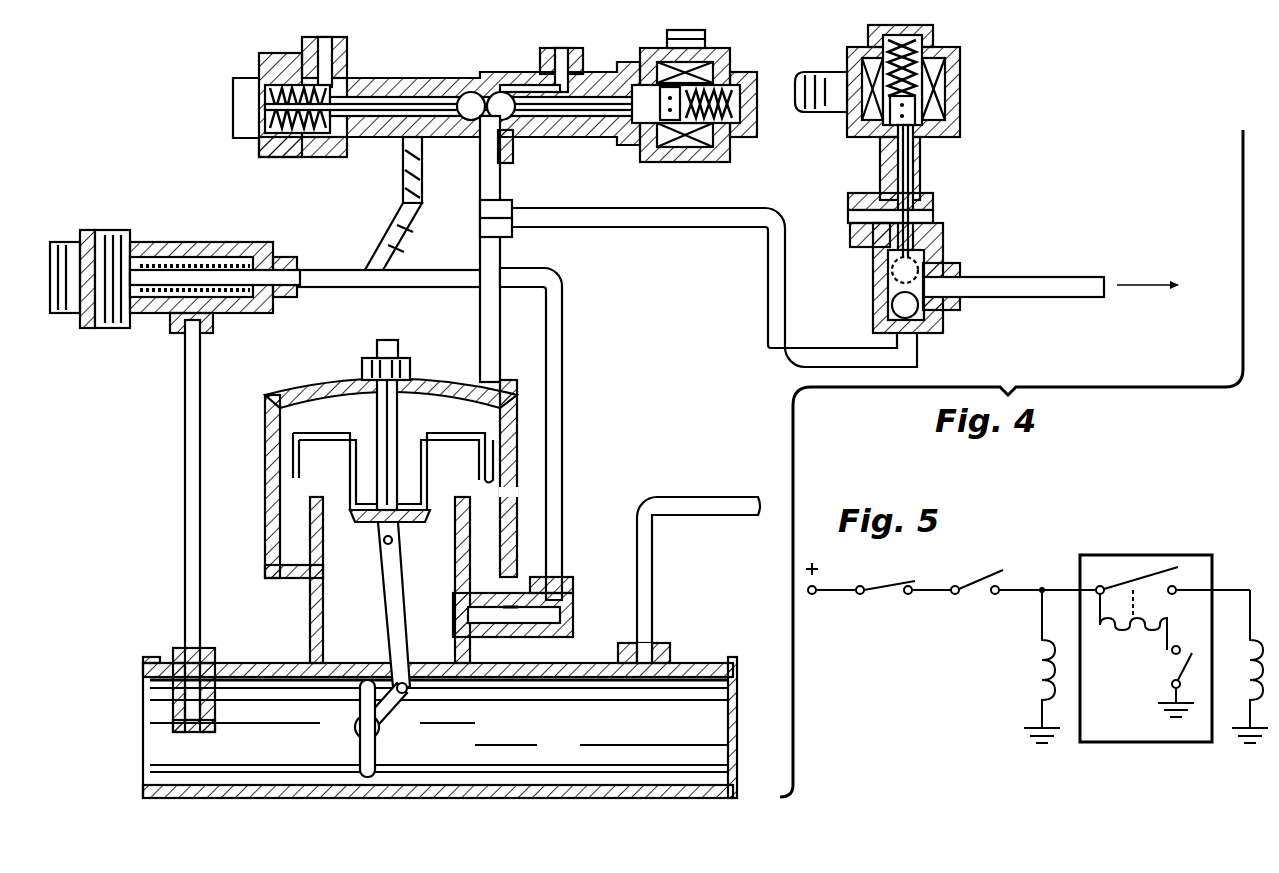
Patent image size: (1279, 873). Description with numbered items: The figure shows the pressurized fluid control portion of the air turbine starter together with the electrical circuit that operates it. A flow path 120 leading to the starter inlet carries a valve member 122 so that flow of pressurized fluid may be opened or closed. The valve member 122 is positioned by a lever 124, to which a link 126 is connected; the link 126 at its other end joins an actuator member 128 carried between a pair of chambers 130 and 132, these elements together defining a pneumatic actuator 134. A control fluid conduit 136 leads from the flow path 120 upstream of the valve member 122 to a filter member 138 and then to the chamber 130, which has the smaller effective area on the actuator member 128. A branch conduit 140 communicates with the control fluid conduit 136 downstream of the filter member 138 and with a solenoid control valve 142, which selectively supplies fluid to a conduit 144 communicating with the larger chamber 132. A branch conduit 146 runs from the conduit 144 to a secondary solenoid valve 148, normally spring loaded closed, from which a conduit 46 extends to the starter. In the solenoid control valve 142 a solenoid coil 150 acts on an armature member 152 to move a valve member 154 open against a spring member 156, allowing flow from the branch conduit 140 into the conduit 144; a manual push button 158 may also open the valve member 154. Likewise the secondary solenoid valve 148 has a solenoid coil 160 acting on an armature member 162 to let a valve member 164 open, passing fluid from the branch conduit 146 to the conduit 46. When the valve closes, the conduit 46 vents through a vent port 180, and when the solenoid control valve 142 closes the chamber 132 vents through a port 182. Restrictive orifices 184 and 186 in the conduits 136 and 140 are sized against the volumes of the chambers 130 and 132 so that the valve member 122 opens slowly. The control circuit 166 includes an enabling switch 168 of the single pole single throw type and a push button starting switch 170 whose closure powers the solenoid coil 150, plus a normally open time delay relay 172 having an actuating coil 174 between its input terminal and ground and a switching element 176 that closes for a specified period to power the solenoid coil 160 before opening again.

In FIG. 4, the conduit 46 is at (1052, 258).
In FIG. 4, the flow path 120 is at (575, 757).
In FIG. 4, the valve member 122 is at (380, 760).
In FIG. 4, the lever 124 is at (395, 708).
In FIG. 4, the link 126 is at (396, 606).
In FIG. 4, the actuator member 128 is at (368, 524).
In FIG. 4, the chamber 130 is at (370, 606).
In FIG. 4, the chamber 132 is at (357, 425).
In FIG. 4, the pneumatic actuator 134 is at (335, 380).
In FIG. 4, the control fluid conduit 136 is at (186, 512).
In FIG. 4, the filter member 138 is at (230, 226).
In FIG. 4, the branch conduit 140 is at (396, 230).
In FIG. 4, the solenoid control valve 142 is at (632, 52).
In FIG. 4, the conduit 144 is at (493, 330).
In FIG. 4, the branch conduit 146 is at (783, 290).
In FIG. 4, the secondary solenoid valve 148 is at (1008, 110).
In FIG. 4, the solenoid coil 150 is at (702, 150).
In FIG. 5, the solenoid coil 150 is at (1042, 672).
In FIG. 4, the armature member 152 is at (663, 165).
In FIG. 4, the valve member 154 is at (478, 92).
In FIG. 4, the spring member 156 is at (736, 96).
In FIG. 4, the manual push button 158 is at (262, 101).
In FIG. 4, the solenoid coil 160 is at (942, 78).
In FIG. 5, the solenoid coil 160 is at (1250, 688).
In FIG. 4, the armature member 162 is at (882, 137).
In FIG. 4, the valve member 164 is at (943, 310).
In FIG. 5, the control circuit 166 is at (1125, 552).
In FIG. 5, the enabling switch 168 is at (882, 600).
In FIG. 5, the starting switch 170 is at (980, 600).
In FIG. 5, the time delay relay 172 is at (1215, 578).
In FIG. 5, the actuating coil 174 is at (1110, 628).
In FIG. 5, the switching element 176 is at (1143, 575).
In FIG. 4, the vent port 180 is at (858, 205).
In FIG. 4, the port 182 is at (541, 60).
In FIG. 4, the restrictive orifice 184 is at (508, 612).
In FIG. 4, the restrictive orifice 186 is at (421, 172).